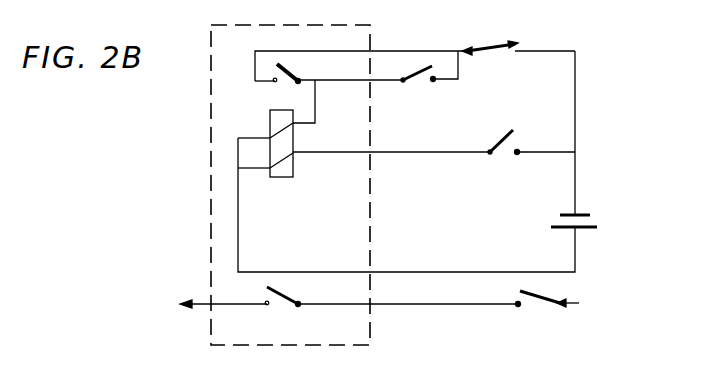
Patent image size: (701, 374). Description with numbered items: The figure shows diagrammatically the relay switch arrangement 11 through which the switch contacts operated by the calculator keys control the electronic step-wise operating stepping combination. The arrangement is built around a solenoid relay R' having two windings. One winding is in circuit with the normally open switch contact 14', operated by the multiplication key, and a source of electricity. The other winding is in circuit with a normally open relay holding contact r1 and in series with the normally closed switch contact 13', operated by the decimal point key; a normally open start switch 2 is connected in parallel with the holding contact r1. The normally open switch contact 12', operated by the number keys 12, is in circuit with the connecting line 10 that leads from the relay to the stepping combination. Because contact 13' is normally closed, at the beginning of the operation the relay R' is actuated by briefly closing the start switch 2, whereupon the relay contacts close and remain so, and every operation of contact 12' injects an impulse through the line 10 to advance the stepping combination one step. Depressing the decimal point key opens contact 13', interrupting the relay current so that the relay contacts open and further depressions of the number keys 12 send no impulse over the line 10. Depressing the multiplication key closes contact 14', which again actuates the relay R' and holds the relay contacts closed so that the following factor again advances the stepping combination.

The connecting line 10 is at (213, 305).
The relay switch arrangement 11 is at (322, 221).
The digital keys 12 is at (391, 308).
The switch contact 12' is at (548, 308).
The switch contact 13' is at (490, 61).
The switch contact 14' is at (504, 156).
The start switch 2 is at (429, 77).
The relay holding contact r1 is at (281, 73).
The solenoid relay R' is at (281, 153).